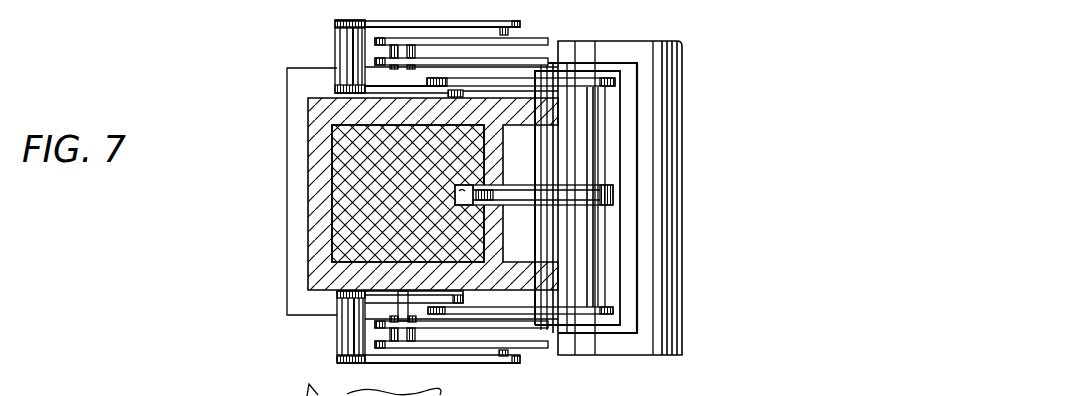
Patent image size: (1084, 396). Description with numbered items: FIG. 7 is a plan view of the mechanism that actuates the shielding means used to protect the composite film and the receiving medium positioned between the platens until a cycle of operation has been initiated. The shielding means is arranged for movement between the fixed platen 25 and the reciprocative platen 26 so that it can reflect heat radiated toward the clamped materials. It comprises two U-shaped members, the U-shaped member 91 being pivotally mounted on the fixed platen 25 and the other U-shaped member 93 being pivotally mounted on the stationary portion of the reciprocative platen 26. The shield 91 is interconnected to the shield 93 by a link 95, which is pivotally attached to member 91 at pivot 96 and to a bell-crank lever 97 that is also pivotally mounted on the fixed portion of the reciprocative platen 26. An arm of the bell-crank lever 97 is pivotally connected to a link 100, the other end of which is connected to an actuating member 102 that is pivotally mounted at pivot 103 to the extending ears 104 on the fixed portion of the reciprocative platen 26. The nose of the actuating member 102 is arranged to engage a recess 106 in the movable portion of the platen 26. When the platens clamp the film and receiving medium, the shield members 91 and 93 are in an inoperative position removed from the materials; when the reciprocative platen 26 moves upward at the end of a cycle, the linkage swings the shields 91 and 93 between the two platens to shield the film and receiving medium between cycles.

The fixed platen 25 is at (287, 159).
The reciprocative platen 26 is at (345, 213).
The U-shaped member 91 is at (684, 215).
The U-shaped member 93 is at (638, 308).
The link 95 is at (408, 364).
The pivot 96 is at (508, 355).
The bell-crank lever 97 is at (388, 298).
The link 100 is at (506, 386).
The actuating member 102 is at (613, 195).
The pivot 103 is at (545, 170).
The extending ears 104 is at (553, 133).
The recess 106 is at (465, 190).